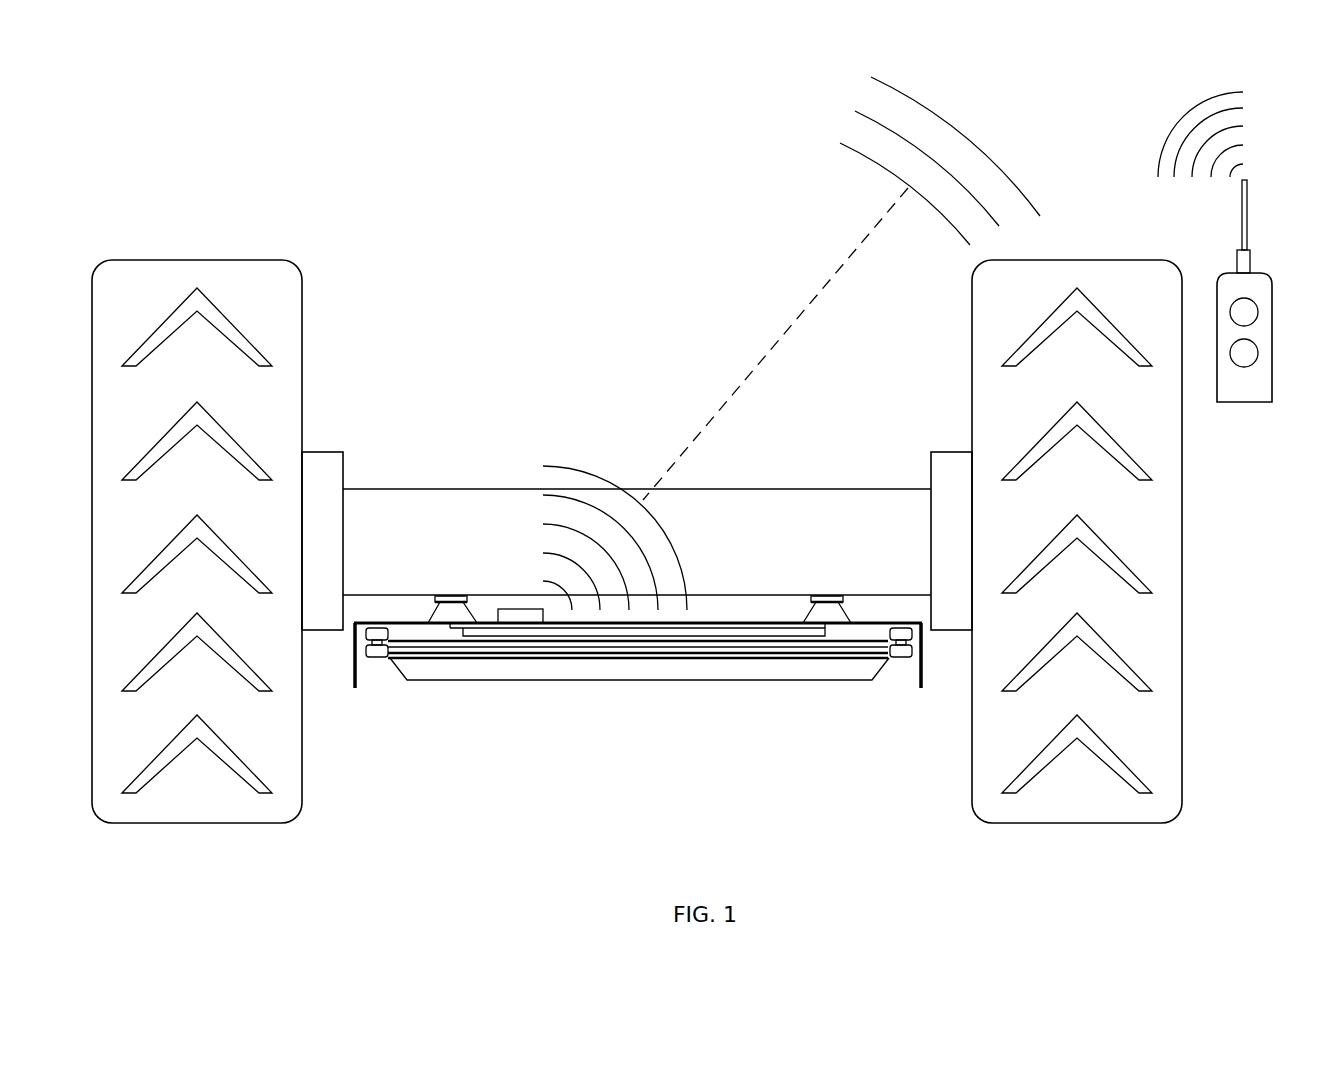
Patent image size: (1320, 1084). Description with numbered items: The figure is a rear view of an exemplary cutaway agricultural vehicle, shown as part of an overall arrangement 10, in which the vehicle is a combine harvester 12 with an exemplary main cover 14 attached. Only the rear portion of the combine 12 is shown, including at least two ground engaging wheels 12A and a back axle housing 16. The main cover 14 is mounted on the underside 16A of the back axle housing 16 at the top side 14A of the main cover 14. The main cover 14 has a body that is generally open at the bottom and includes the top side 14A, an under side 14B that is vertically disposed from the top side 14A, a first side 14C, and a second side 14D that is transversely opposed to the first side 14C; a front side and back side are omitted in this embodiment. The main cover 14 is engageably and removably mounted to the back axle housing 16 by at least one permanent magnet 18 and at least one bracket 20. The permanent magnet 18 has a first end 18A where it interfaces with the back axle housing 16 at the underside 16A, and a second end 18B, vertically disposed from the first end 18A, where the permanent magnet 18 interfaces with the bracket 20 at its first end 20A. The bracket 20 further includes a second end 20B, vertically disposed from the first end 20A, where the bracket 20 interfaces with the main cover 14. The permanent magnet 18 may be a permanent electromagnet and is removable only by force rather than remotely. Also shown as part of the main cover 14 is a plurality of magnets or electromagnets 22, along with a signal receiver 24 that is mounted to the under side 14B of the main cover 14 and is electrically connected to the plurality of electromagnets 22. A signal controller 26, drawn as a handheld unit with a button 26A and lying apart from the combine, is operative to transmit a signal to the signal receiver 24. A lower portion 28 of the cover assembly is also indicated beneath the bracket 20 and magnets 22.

The robotic vehicle system 10 is at (1068, 131).
The combine harvester 12 is at (428, 265).
The ground engaging wheels 12A is at (160, 260).
The main cover 14 is at (357, 690).
The top side 14A is at (722, 628).
The under side 14B is at (863, 645).
The first side 14C is at (355, 680).
The second side 14D is at (925, 680).
The back axle housing 16 is at (693, 489).
The underside 16A is at (368, 594).
The permanent magnet 18 is at (470, 600).
The first end 18A is at (438, 598).
The second end 18B is at (435, 640).
The bracket 20 is at (462, 628).
The first end 20A is at (448, 596).
The second end 20B is at (453, 630).
The plurality of magnets or electromagnets 22 is at (365, 652).
The signal receiver 24 is at (523, 609).
The signal controller 26 is at (1272, 290).
The remote control button 26A is at (1244, 357).
The battery housing 28 is at (557, 682).